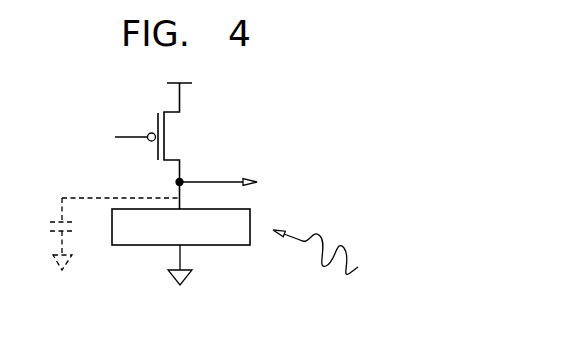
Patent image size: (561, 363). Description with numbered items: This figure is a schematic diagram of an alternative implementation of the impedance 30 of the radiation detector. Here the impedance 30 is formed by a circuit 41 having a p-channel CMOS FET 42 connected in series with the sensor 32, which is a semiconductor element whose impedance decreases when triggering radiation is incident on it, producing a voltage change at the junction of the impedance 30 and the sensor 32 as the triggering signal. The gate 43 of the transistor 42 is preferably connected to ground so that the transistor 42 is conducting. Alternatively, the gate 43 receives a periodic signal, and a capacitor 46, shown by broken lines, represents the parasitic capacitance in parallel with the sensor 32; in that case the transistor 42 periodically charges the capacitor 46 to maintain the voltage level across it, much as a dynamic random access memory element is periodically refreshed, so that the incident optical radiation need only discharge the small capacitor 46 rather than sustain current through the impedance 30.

The impedance 30 is at (255, 133).
The sensor 32 is at (133, 247).
The circuit 41 is at (293, 147).
The p-channel CMOS FET 42 is at (165, 127).
The gate 43 is at (157, 117).
The capacitor 46 is at (50, 221).